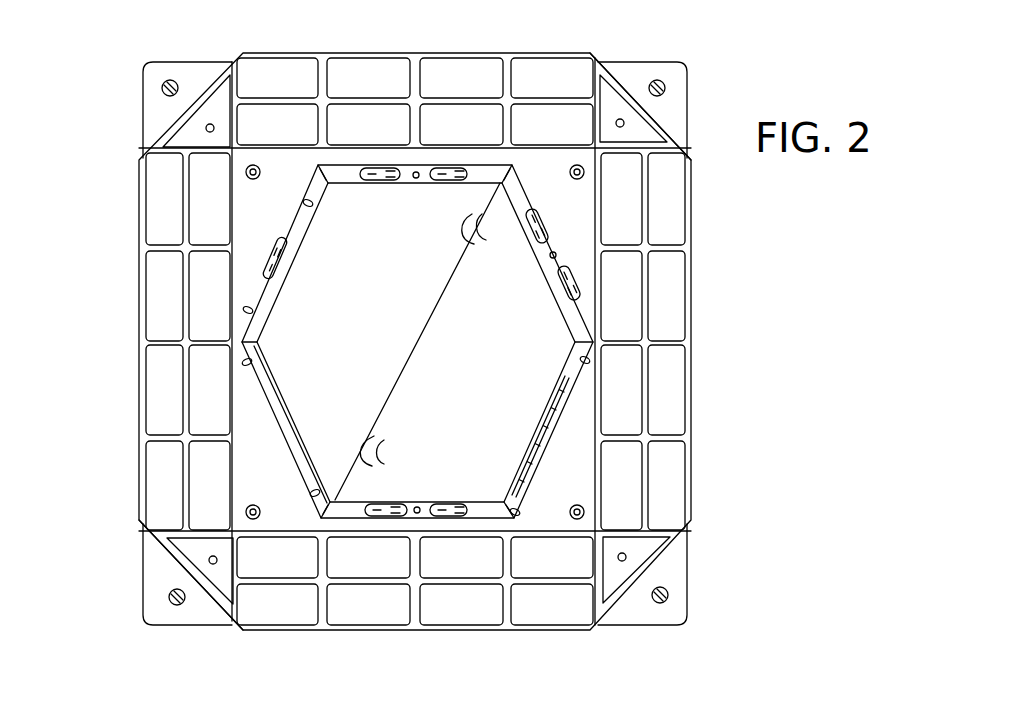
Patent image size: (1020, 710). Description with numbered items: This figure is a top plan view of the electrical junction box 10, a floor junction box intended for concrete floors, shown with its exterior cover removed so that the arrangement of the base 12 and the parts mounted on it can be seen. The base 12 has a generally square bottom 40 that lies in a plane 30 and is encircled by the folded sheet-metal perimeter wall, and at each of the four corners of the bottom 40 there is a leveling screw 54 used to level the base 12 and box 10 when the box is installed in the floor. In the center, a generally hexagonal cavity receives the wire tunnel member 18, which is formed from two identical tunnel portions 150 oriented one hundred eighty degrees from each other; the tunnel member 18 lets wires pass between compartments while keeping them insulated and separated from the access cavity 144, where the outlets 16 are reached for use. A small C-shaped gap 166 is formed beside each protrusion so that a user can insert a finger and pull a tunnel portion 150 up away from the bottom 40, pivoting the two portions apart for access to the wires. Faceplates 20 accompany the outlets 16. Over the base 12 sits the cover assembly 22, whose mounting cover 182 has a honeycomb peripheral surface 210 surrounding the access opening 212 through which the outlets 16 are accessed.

The electrical junction box 10 is at (122, 61).
The base 12 is at (697, 562).
The outlets 16 is at (565, 309).
The wire tunnel member 18 is at (355, 355).
The faceplates 20 is at (514, 172).
The cover assembly 22 is at (134, 221).
The plane 30 is at (169, 560).
The bottom 40 is at (629, 63).
The leveling screw 54 is at (162, 89).
The access cavity 144 is at (341, 226).
The tunnel portions 150 is at (502, 288).
The C-shaped gap 166 is at (480, 217).
The mounting cover 182 is at (464, 47).
The honeycomb peripheral surface 210 is at (668, 338).
The access opening 212 is at (283, 432).